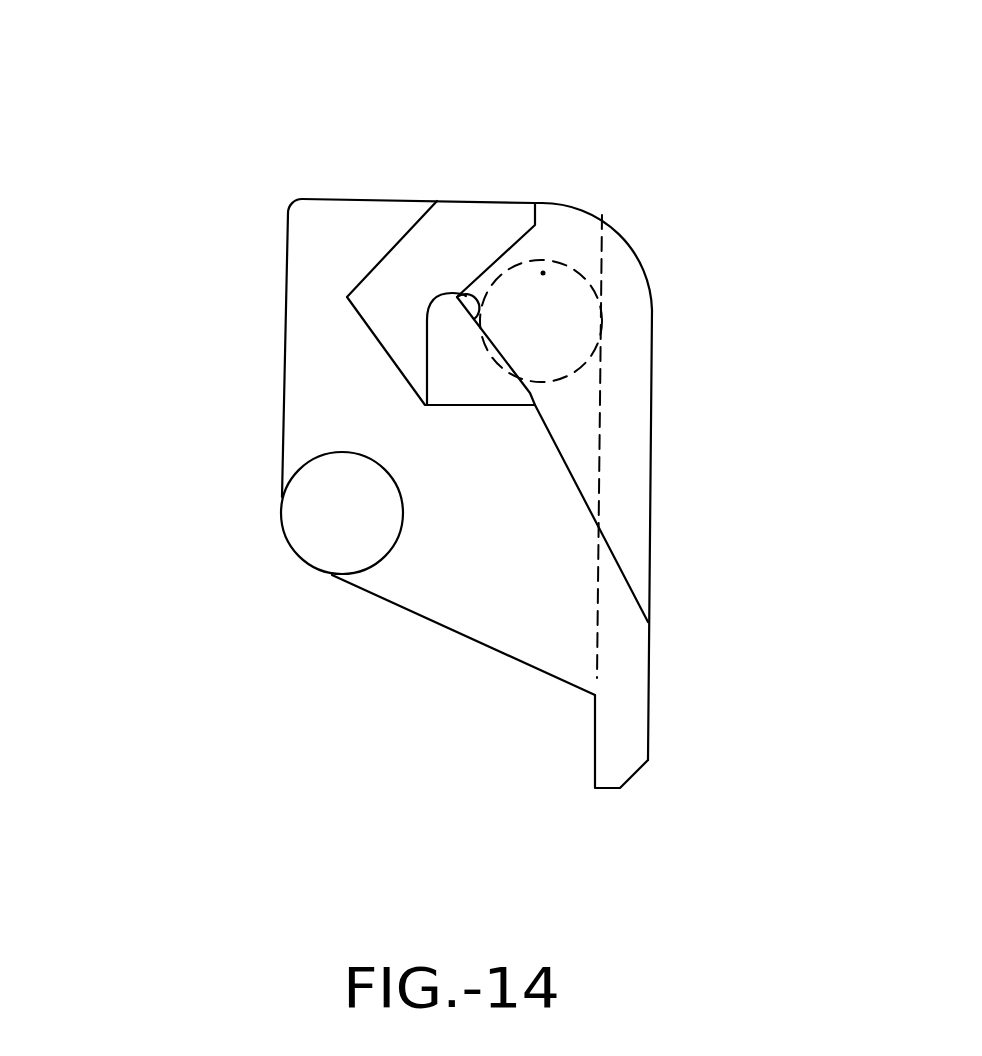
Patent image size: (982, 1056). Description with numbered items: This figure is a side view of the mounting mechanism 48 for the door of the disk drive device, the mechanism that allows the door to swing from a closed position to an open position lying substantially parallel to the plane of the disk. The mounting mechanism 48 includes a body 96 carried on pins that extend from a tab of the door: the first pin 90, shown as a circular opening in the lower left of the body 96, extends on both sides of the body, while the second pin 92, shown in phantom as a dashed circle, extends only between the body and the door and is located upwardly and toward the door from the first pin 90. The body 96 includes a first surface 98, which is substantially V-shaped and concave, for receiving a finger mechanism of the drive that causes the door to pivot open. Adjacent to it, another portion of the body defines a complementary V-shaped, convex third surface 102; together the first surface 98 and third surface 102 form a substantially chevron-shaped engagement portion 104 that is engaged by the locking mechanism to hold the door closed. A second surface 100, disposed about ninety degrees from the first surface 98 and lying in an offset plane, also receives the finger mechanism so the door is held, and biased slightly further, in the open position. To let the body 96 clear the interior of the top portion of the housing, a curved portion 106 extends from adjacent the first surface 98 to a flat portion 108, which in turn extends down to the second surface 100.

The mounting mechanism 48 is at (208, 224).
The first pin 90 is at (330, 555).
The second pin 92 is at (545, 262).
The body 96 is at (457, 200).
The first surface 98 is at (427, 405).
The second surface 100 is at (623, 782).
The third surface 102 is at (407, 237).
The engagement portion 104 is at (238, 371).
The curved portion 106 is at (660, 237).
The flat portion 108 is at (650, 535).